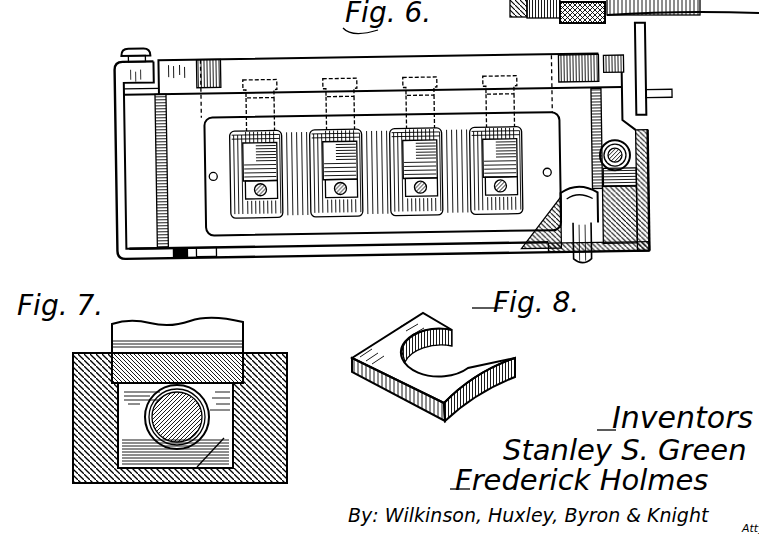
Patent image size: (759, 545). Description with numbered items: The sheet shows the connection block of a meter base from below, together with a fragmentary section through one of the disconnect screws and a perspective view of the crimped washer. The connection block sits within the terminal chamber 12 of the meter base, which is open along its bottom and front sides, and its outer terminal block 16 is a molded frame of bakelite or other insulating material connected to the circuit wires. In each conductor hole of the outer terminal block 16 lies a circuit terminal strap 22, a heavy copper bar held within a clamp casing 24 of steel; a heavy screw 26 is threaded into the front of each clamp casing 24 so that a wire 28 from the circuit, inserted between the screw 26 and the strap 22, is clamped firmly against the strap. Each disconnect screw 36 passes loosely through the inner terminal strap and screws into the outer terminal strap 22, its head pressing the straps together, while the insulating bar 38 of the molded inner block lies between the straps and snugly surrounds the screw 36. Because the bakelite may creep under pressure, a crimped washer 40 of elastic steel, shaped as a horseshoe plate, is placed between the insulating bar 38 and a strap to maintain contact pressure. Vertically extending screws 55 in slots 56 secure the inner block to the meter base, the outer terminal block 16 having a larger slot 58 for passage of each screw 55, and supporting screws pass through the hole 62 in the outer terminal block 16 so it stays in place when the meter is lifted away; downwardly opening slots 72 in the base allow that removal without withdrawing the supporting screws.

In FIG. 6, the terminal chamber 12 is at (118, 218).
In FIG. 6, the outer terminal block 16 is at (535, 69).
In FIG. 6, the circuit terminal strap 22 is at (637, 0).
In FIG. 6, the clamp casing 24 is at (313, 142).
In FIG. 6, the heavy screw 26 is at (330, 86).
In FIG. 6, the wire 28 is at (260, 199).
In FIG. 7, the disconnect screw 36 is at (182, 400).
In FIG. 7, the insulating bar 38 is at (213, 462).
In FIG. 7, the crimped washer 40 is at (145, 457).
In FIG. 8, the crimped washer 40 is at (428, 387).
In FIG. 6, the screw 55 is at (630, 162).
In FIG. 6, the slot 56 is at (637, 155).
In FIG. 6, the slot 58 is at (625, 178).
In FIG. 6, the hole 62 is at (647, 207).
In FIG. 6, the slot 72 is at (185, 259).